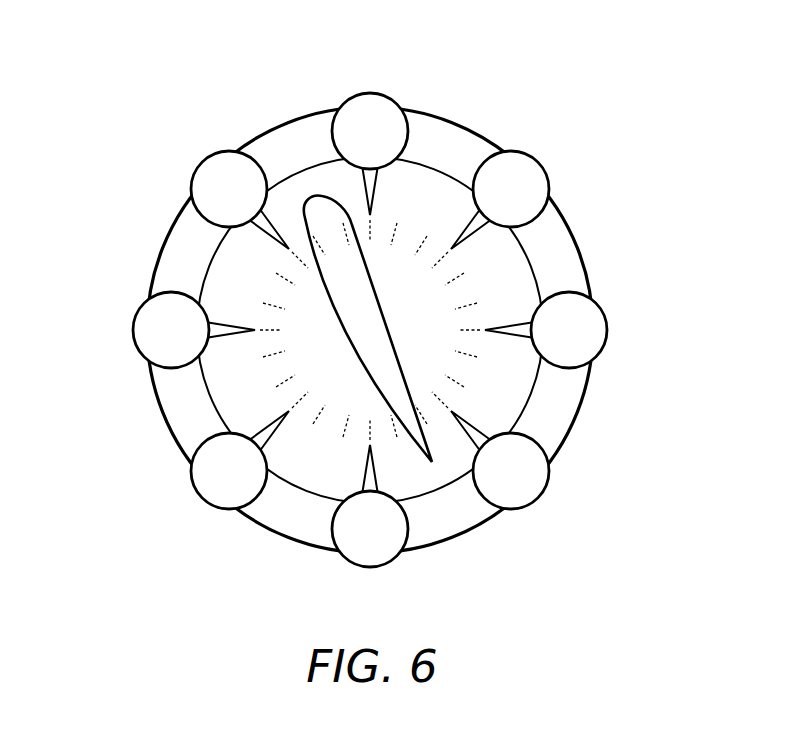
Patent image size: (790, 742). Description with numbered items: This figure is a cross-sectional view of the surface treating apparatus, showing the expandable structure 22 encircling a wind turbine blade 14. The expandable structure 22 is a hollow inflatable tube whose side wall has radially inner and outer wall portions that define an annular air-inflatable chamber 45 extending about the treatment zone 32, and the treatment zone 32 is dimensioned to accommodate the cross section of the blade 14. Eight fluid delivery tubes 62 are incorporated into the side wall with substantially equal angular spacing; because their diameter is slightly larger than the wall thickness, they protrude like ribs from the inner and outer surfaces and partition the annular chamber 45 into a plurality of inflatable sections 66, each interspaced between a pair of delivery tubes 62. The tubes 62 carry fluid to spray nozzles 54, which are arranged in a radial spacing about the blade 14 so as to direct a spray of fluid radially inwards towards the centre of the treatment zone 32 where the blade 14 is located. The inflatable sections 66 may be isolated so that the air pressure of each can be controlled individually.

The wind turbine blade 14 is at (384, 306).
The expandable structure 22 is at (534, 88).
The treatment zone 32 is at (331, 355).
The annular air-inflatable chamber 45 is at (583, 271).
The spray nozzles 54 is at (380, 190).
The fluid delivery tubes 62 is at (370, 93).
The inflatable sections 66 is at (290, 136).